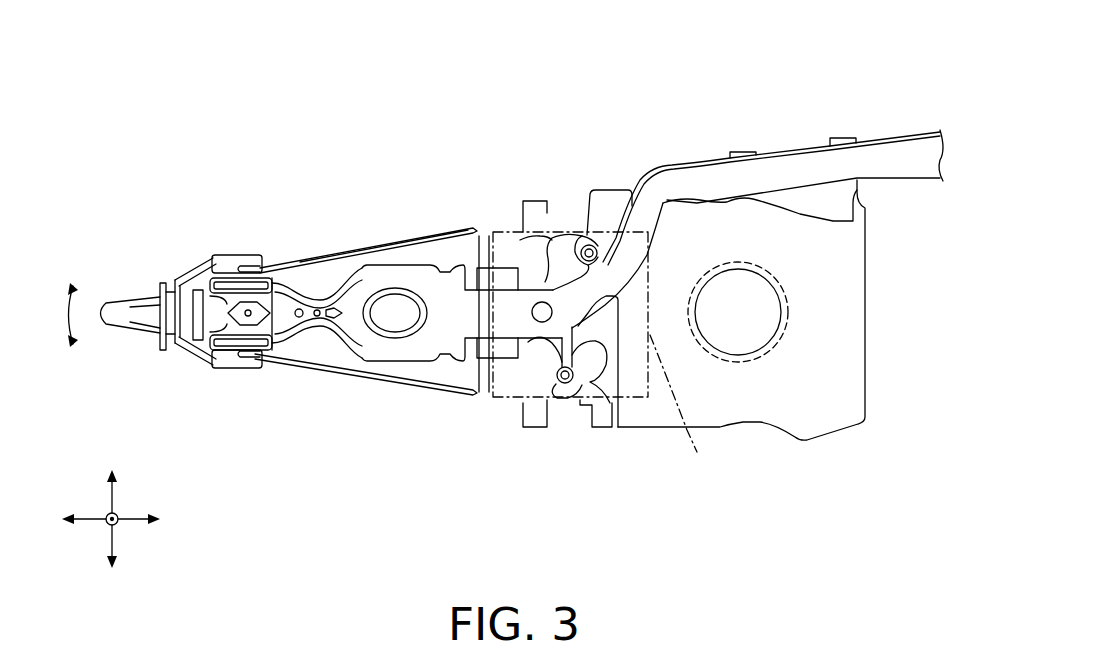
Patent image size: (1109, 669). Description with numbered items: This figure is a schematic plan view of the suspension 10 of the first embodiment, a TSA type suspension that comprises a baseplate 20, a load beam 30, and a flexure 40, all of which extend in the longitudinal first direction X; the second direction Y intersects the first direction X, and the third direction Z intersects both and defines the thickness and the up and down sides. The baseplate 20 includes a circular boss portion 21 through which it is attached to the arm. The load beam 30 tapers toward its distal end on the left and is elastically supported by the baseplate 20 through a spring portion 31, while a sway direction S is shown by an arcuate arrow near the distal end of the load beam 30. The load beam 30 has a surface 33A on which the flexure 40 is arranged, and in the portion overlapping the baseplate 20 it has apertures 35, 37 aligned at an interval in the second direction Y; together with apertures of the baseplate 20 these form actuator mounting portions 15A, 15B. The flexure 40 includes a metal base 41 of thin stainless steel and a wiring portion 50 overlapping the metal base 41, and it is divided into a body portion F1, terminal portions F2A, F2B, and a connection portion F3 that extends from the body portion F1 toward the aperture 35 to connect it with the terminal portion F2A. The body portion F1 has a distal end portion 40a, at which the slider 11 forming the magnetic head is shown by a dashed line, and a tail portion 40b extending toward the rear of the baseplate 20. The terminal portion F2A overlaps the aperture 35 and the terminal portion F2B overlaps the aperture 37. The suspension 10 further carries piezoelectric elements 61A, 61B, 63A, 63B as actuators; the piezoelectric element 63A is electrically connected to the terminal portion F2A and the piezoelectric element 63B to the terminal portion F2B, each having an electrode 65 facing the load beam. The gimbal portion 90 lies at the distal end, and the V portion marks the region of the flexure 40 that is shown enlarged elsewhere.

The suspension 10 is at (815, 82).
The slider 11 is at (300, 265).
The baseplate 20 is at (866, 376).
The boss portion 21 is at (790, 310).
The load beam 30 is at (353, 372).
The spring portion 31 is at (508, 373).
The surface 33A is at (432, 243).
The aperture 35 is at (569, 402).
The aperture 37 is at (543, 243).
The flexure 40 is at (665, 164).
The distal end portion 40a is at (237, 243).
The tail portion 40b is at (902, 120).
The metal base 41 is at (480, 348).
The wiring portion 50 is at (457, 336).
The piezoelectric element 61A is at (223, 343).
The piezoelectric element 61B is at (217, 270).
The piezoelectric element 63A is at (573, 390).
The piezoelectric element 63B is at (570, 247).
The electrode 65 is at (543, 272).
The gimbal portion 90 is at (195, 343).
The actuator mounting portion 15A is at (551, 420).
The actuator mounting portion 15B is at (606, 210).
The body portion F1 is at (397, 384).
The terminal portion F2A is at (562, 404).
The terminal portion F2B is at (586, 232).
The connection portion F3 is at (544, 355).
The sway direction S is at (61, 315).
The V portion V is at (703, 464).
The first direction X is at (140, 516).
The second direction Y is at (108, 544).
The third direction Z is at (126, 537).